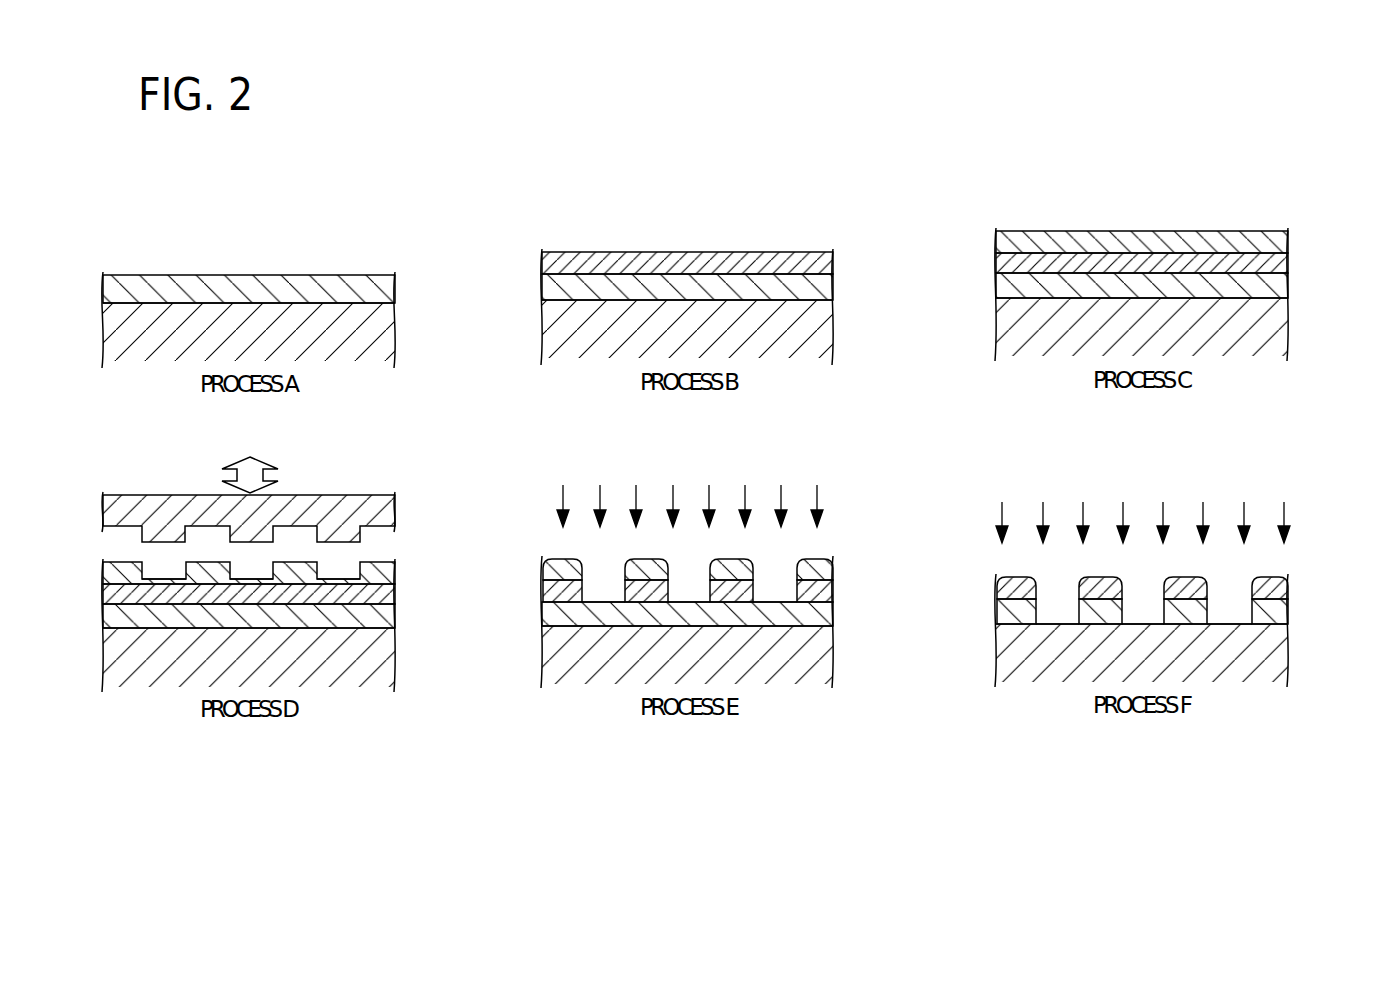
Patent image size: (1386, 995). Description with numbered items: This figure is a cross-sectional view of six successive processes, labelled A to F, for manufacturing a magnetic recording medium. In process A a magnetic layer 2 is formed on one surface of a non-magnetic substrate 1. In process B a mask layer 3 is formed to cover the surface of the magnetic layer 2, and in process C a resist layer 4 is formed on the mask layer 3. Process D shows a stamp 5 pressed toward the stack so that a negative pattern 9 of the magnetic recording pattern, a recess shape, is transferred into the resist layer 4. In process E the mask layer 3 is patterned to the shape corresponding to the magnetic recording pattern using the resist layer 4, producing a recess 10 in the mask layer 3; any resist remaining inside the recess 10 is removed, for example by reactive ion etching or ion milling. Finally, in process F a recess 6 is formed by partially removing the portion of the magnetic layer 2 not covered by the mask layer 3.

The non-magnetic substrate 1 is at (721, 460).
The magnetic layer 2 is at (721, 454).
The mask layer 3 is at (721, 428).
The resist layer 4 is at (721, 402).
The stamp 5 is at (273, 517).
The recess 6 is at (1232, 624).
The negative pattern 9 is at (340, 579).
The recess 10 is at (775, 599).